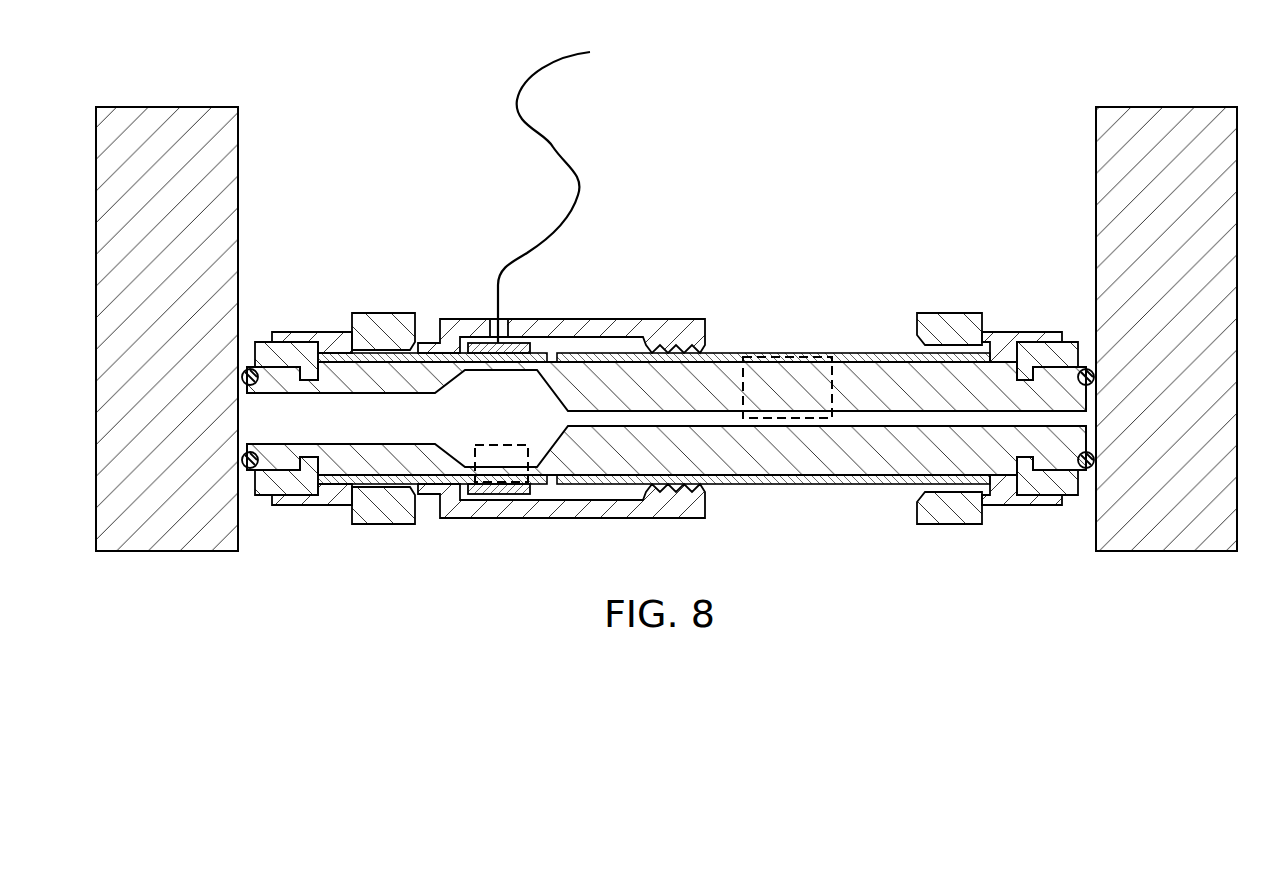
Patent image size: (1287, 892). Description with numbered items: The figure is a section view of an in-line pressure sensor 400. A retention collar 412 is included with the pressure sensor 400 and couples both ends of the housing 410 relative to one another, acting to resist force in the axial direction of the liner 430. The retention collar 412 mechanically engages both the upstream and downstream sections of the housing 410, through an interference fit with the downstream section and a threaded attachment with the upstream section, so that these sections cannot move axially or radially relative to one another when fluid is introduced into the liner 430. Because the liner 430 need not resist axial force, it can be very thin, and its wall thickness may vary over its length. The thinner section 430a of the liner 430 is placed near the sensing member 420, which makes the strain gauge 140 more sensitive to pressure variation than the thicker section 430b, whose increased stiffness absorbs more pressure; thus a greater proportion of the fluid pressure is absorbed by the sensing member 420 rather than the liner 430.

The pressure sensor 400 is at (912, 166).
The housing 410 is at (419, 345).
The retention collar 412 is at (613, 520).
The strain gauge 140 is at (513, 343).
The sensing member 420 is at (508, 485).
The liner 430 is at (787, 465).
The thinner section 430a is at (497, 445).
The thicker section 430b is at (797, 355).